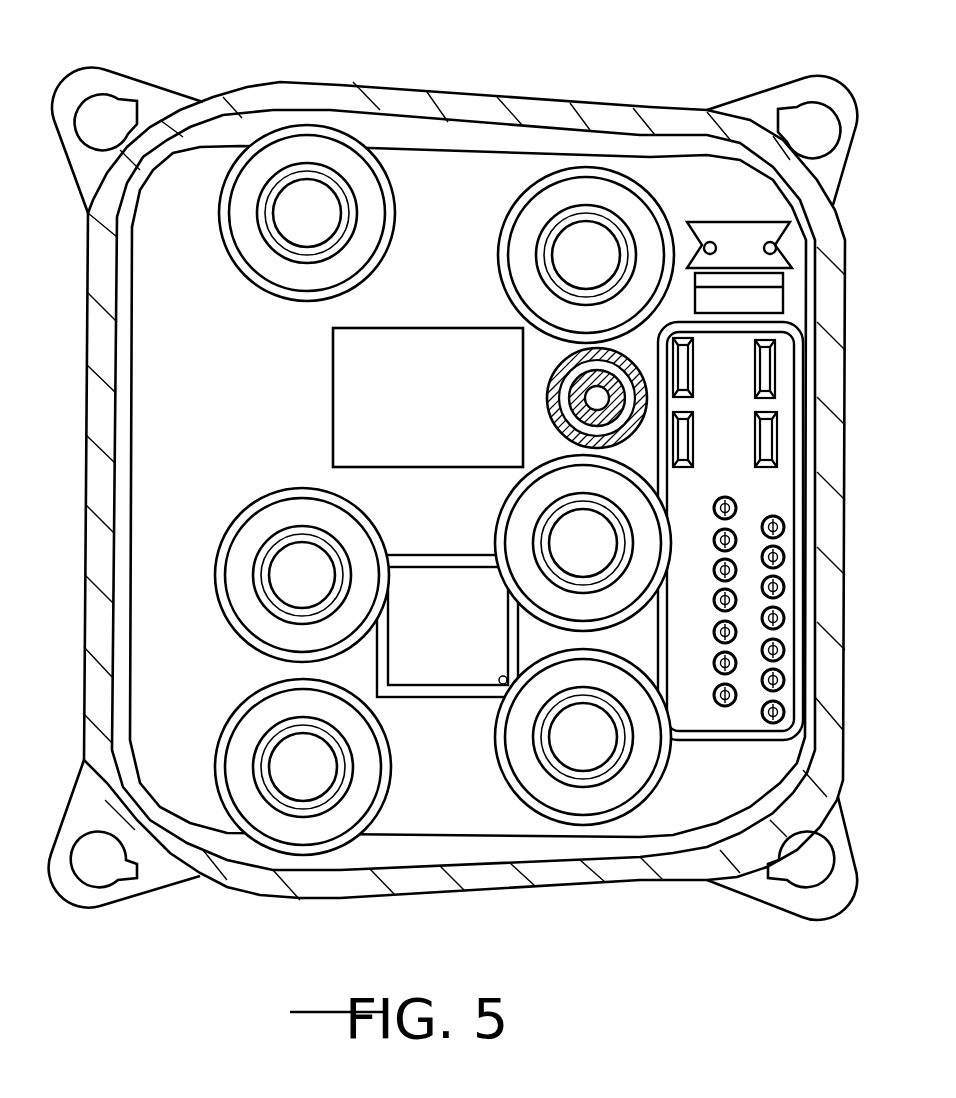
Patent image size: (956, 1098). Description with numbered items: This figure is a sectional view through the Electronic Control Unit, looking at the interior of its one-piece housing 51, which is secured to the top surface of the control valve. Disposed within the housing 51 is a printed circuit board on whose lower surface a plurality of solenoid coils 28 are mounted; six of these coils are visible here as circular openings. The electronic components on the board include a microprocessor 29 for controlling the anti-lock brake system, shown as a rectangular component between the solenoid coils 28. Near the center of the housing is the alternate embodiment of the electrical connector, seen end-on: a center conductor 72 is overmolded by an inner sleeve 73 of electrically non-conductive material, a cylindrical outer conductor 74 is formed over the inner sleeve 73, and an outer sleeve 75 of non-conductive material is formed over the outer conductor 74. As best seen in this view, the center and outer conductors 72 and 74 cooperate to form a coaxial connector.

The housing 51 is at (570, 113).
The solenoid coils 28 is at (366, 184).
The microprocessor 29 is at (345, 393).
The center conductor 72 is at (578, 398).
The outer conductor 74 is at (567, 417).
The inner sleeve 73 is at (643, 372).
The outer sleeve 75 is at (647, 436).